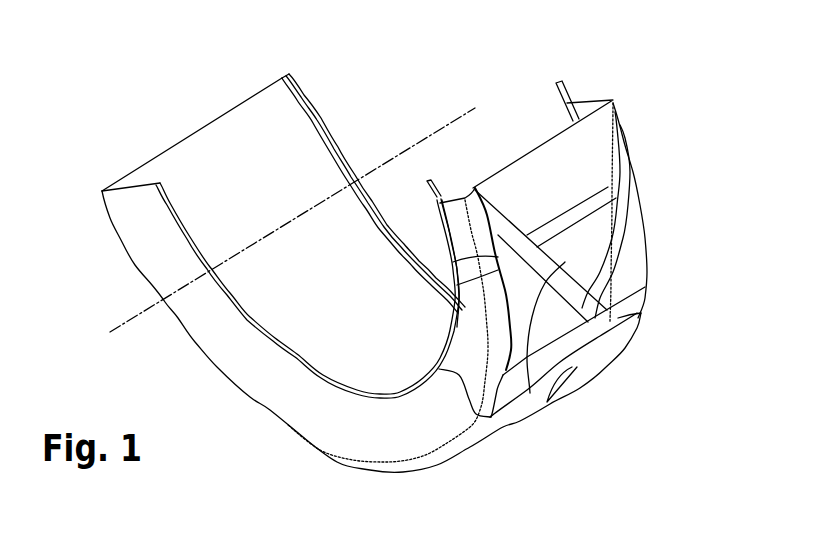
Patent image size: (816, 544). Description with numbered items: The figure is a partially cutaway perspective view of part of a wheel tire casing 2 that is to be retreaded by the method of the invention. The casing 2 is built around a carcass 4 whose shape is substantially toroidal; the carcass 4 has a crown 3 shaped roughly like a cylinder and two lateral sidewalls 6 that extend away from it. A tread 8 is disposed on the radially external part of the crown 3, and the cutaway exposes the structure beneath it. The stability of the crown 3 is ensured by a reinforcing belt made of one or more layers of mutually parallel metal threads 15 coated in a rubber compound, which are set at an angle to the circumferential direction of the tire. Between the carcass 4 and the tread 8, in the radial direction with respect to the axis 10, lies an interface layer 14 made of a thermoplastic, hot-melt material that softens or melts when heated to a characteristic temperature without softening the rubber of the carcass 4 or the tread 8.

The wheel tire casing 2 is at (650, 95).
The crown 3 is at (537, 182).
The carcass 4 is at (440, 227).
The lateral sidewalls 6 is at (468, 200).
The tread 8 is at (503, 421).
The axis 10 is at (443, 127).
The interface layer 14 is at (621, 315).
The metal threads 15 is at (614, 147).